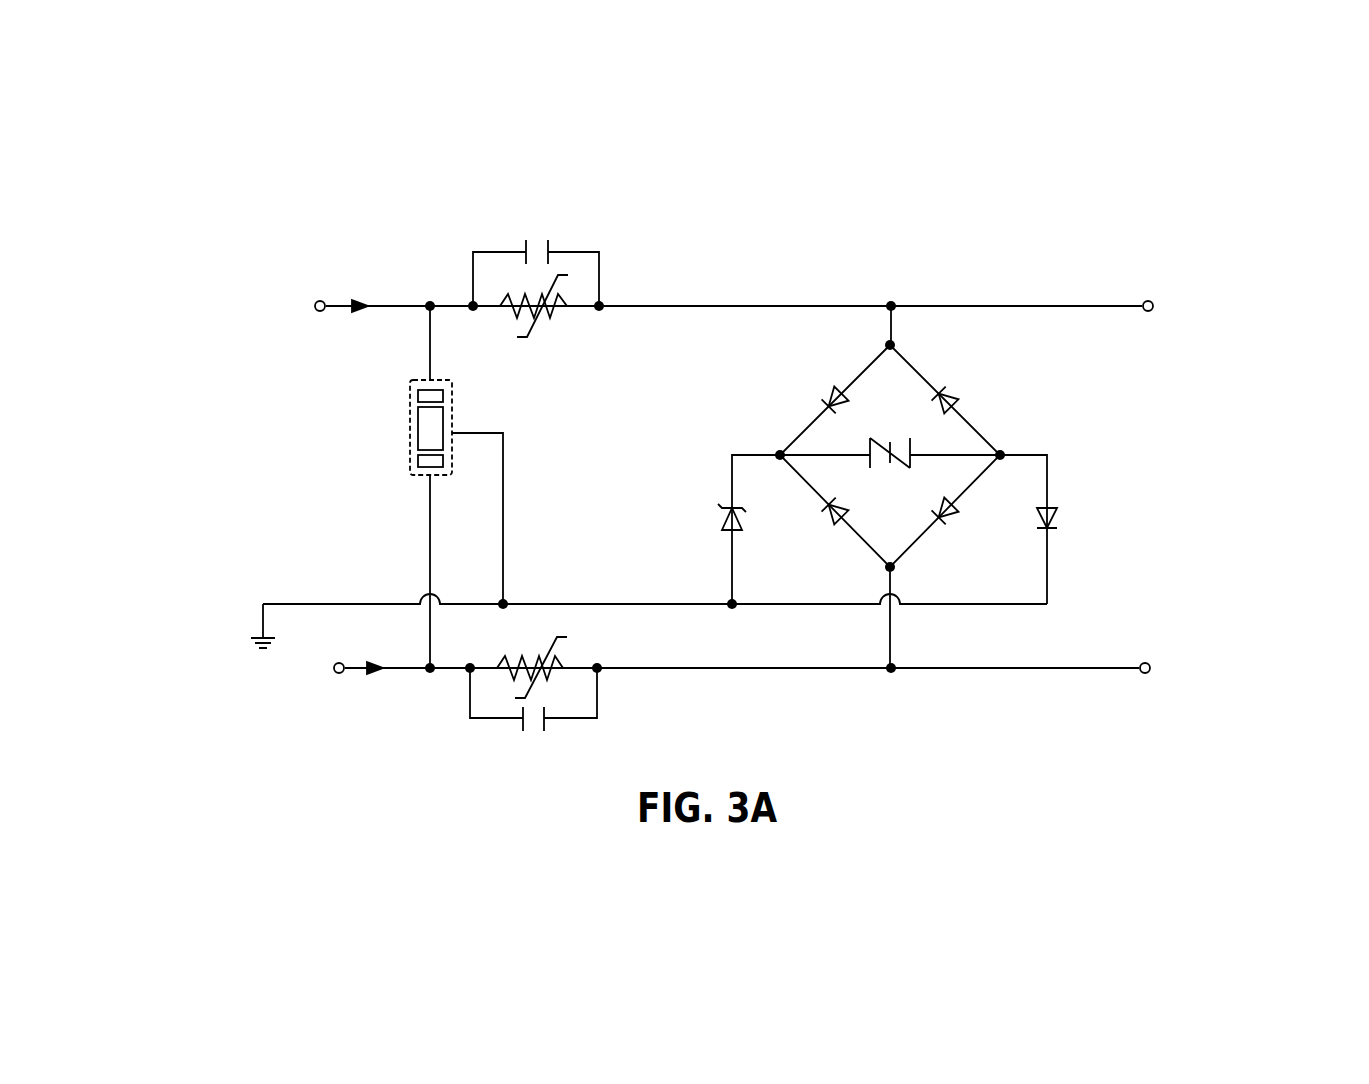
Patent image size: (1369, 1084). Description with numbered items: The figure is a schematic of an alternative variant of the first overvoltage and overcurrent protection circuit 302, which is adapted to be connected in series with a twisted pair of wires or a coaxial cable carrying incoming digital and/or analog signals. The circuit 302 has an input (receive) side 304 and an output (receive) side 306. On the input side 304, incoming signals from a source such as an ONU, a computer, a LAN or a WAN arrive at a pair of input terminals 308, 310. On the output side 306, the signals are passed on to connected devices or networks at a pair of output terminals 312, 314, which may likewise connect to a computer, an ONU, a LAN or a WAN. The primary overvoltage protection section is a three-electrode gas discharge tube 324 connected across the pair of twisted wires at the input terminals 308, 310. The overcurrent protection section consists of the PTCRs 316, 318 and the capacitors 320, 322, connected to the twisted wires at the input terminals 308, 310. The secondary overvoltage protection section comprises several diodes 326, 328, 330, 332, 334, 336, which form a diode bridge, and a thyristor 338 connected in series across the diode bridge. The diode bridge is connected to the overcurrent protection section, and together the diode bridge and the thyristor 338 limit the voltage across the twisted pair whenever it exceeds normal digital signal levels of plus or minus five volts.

The first overvoltage and overcurrent protection circuit 302 is at (943, 222).
The input (receive) side 304 is at (108, 457).
The output (receive) side 306 is at (1203, 458).
The input terminal 308 is at (336, 303).
The input terminal 310 is at (357, 665).
The output terminal 312 is at (1133, 304).
The output terminal 314 is at (1130, 666).
The PTCR 316 is at (566, 318).
The PTCR 318 is at (580, 666).
The capacitor 320 is at (505, 252).
The capacitor 322 is at (567, 720).
The three-electrode gas discharge tube 324 is at (408, 413).
The diode 326 is at (840, 392).
The diode 328 is at (953, 400).
The diode 330 is at (832, 517).
The diode 332 is at (947, 520).
The diode 334 is at (728, 512).
The diode 336 is at (1052, 517).
The thyristor 338 is at (910, 440).